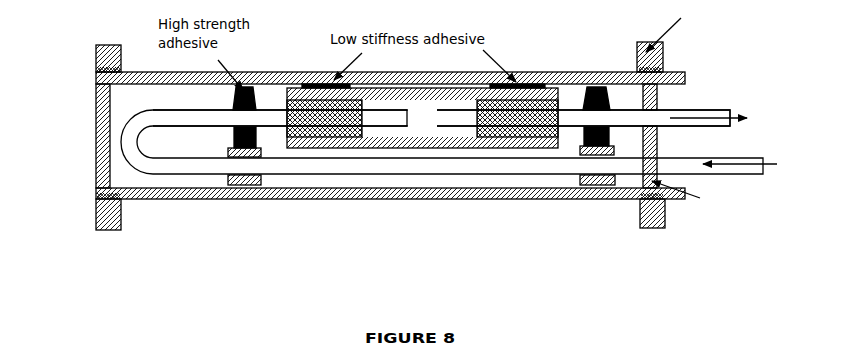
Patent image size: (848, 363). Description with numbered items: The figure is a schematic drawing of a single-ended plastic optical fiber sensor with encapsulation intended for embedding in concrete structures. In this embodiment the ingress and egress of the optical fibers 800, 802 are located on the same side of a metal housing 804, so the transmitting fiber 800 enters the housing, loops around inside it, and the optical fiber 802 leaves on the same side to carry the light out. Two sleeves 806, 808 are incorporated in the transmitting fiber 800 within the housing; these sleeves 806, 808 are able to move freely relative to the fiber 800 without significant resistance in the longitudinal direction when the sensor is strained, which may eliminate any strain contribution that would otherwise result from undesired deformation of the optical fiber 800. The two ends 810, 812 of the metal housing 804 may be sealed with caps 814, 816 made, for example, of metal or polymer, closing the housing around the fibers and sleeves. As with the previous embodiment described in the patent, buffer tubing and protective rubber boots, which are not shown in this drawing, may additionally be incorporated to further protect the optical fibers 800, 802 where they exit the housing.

The transmitting fiber 800 is at (759, 170).
The optical fiber 802 is at (719, 108).
The metal housing 804 is at (571, 70).
The sleeve 806 is at (242, 183).
The sleeve 808 is at (574, 190).
The end of the metal housing 810 is at (90, 178).
The end of the metal housing 812 is at (658, 144).
The cap 814 is at (98, 146).
The cap 816 is at (657, 97).